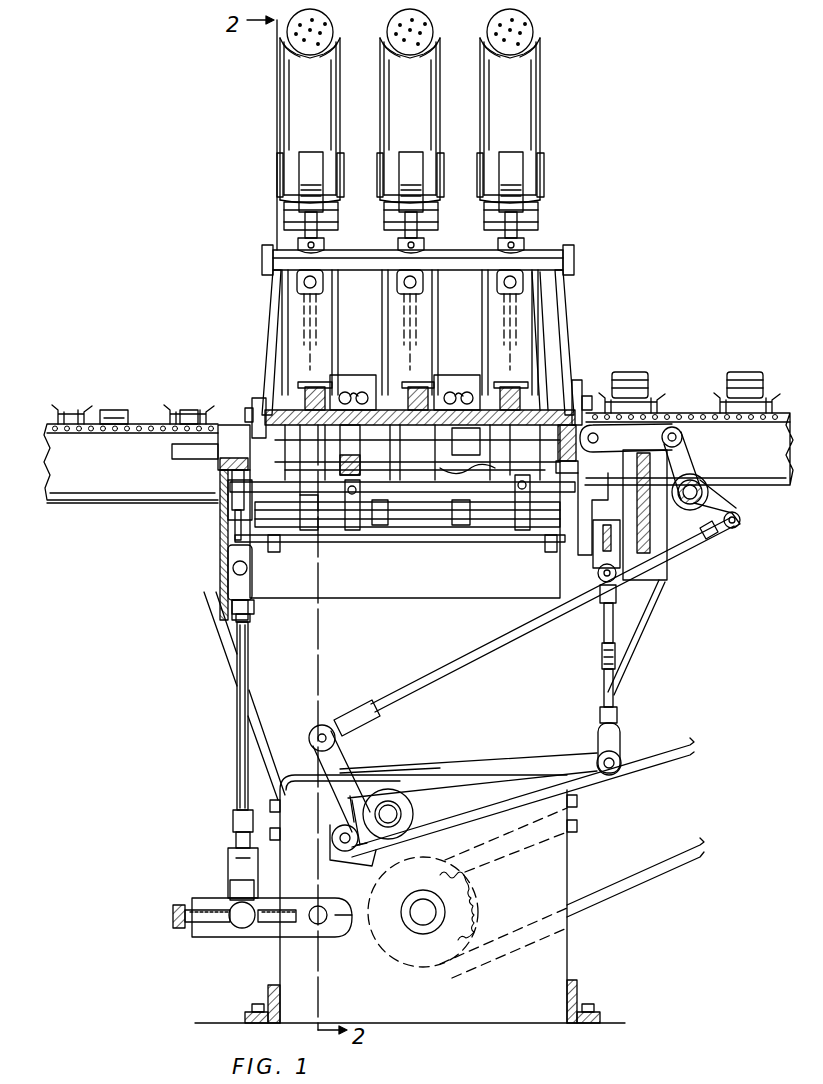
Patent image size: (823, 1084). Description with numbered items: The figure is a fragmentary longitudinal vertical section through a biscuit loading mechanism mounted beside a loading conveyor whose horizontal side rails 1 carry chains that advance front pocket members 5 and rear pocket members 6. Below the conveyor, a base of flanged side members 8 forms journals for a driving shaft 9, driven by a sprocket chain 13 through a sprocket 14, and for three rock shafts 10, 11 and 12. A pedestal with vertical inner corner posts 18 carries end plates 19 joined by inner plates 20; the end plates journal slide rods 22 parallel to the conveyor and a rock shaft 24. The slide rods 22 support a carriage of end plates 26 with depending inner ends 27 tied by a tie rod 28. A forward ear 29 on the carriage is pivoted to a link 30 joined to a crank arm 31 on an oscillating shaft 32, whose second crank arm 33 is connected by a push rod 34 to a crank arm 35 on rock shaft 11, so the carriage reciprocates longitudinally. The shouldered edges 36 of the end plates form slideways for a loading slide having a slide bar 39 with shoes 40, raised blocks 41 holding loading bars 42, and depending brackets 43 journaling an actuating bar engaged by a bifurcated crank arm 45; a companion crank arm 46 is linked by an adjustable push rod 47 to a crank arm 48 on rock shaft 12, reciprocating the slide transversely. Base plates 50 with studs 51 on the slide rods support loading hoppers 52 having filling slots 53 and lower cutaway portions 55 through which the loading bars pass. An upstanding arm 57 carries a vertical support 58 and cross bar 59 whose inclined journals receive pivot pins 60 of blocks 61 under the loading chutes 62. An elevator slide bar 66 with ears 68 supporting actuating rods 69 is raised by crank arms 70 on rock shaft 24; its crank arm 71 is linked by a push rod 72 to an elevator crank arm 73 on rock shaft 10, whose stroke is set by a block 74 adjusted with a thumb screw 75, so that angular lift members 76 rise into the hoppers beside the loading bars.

The side rails 1 is at (86, 487).
The front pocket members 5 is at (208, 405).
The rear pocket members 6 is at (166, 410).
The flanged side members 8 is at (500, 1022).
The driving shaft 9 is at (426, 915).
The rock shaft 10 is at (316, 906).
The rock shaft 11 is at (330, 838).
The rock shaft 12 is at (400, 814).
The sprocket chain 13 is at (672, 850).
The sprocket 14 is at (470, 890).
The inner corner posts 18 is at (222, 640).
The end plates 19 is at (218, 516).
The inner plates 20 is at (378, 594).
The slide rods 22 is at (186, 458).
The rock shaft 24 is at (417, 494).
The end plates 26 is at (572, 450).
The depending inner ends 27 is at (276, 548).
The tie rod 28 is at (418, 545).
The ear 29 is at (592, 415).
The link 30 is at (645, 428).
The crank arm 31 is at (698, 486).
The oscillating shaft 32 is at (708, 490).
The crank arm 33 is at (742, 518).
The push rod 34 is at (478, 668).
The crank arm 35 is at (340, 768).
The rabbeted edges 36 is at (576, 432).
The slide bar 39 is at (442, 402).
The shoes 40 is at (578, 382).
The raised blocks 41 is at (336, 402).
The loading bars 42 is at (318, 386).
The depending brackets 43 is at (366, 454).
The crank arm 45 is at (344, 395).
The crank arm 46 is at (596, 545).
The adjustable push rod 47 is at (602, 652).
The crank arm 48 is at (498, 772).
The base plates 50 is at (420, 386).
The studs 51 is at (461, 385).
The loading hoppers 52 is at (492, 292).
The slots 53 is at (392, 292).
The cutaway portions 55 is at (530, 385).
The upstanding arm 57 is at (258, 400).
The vertical support 58 is at (274, 312).
The cross bar 59 is at (540, 250).
The pivot pins 60 is at (536, 214).
The blocks 61 is at (522, 160).
The loading chutes 62 is at (395, 72).
The elevator slide bar 66 is at (380, 528).
The ears 68 is at (461, 528).
The actuating rods 69 is at (312, 532).
The crank arms 70 is at (352, 532).
The crank arm 71 is at (234, 528).
The push rod 72 is at (236, 738).
The elevator crank arm 73 is at (262, 935).
The block 74 is at (230, 902).
The thumb screw 75 is at (172, 915).
The angular lift members 76 is at (467, 469).